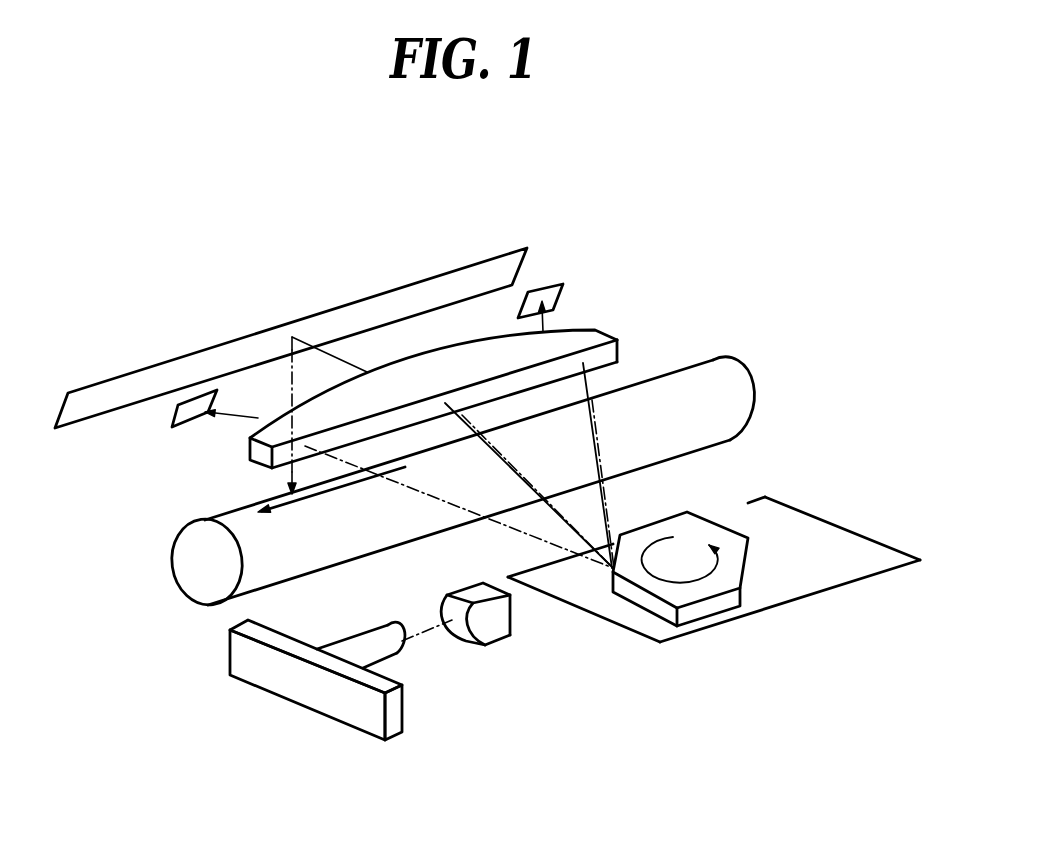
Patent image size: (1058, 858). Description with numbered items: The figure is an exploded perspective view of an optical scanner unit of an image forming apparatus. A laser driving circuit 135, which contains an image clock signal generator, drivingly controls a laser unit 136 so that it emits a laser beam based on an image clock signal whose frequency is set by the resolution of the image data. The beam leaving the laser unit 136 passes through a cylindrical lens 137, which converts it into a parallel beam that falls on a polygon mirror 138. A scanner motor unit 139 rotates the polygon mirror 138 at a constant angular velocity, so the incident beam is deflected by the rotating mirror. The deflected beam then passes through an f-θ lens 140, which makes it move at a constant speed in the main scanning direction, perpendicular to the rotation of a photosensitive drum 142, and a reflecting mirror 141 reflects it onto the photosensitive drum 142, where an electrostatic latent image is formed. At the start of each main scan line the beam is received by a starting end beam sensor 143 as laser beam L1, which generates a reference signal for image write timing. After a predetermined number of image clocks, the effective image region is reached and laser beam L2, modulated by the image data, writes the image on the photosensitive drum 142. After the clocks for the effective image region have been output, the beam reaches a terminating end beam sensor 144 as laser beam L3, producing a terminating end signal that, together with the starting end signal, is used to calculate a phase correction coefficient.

The laser driving circuit 135 is at (252, 655).
The laser unit 136 is at (363, 642).
The cylindrical lens 137 is at (497, 628).
The polygon mirror 138 is at (712, 604).
The scanner motor unit 139 is at (798, 530).
The f-θ lens 140 is at (598, 333).
The reflecting mirror 141 is at (102, 403).
The photosensitive drum 142 is at (188, 549).
The starting end beam sensor 143 is at (552, 293).
The terminating end beam sensor 144 is at (187, 418).
The laser beam L1 is at (603, 447).
The laser beam L2 is at (527, 473).
The laser beam L3 is at (427, 500).